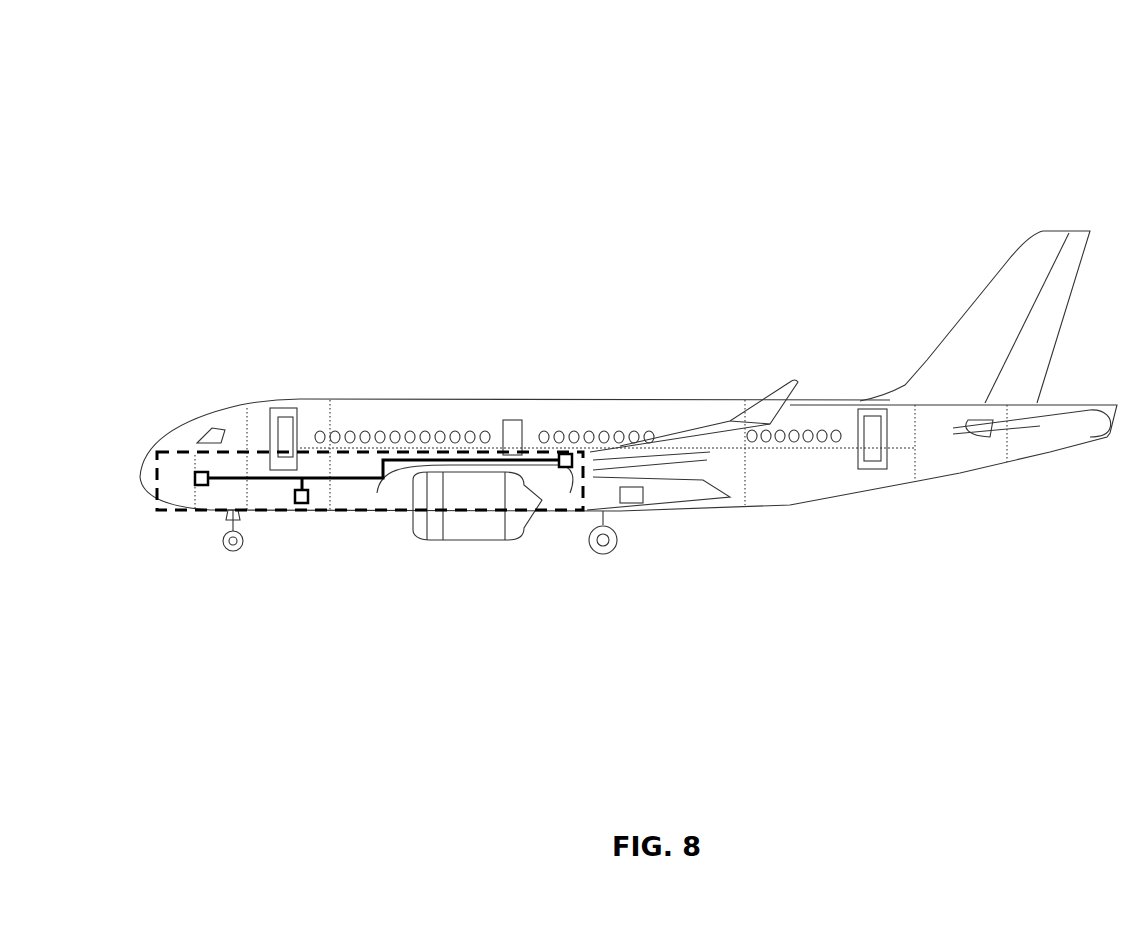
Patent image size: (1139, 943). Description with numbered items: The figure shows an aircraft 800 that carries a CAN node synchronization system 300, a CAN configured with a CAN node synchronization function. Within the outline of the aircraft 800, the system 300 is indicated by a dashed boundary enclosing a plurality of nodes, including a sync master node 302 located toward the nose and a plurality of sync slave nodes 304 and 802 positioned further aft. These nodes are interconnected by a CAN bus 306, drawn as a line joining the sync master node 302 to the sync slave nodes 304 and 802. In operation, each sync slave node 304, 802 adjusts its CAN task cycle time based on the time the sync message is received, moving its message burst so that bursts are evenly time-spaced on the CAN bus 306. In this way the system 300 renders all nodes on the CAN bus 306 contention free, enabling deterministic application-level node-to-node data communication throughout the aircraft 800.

The aircraft 800 is at (953, 120).
The system 300 is at (189, 513).
The sync master node 302 is at (193, 475).
The sync slave node 304 is at (306, 507).
The CAN bus 306 is at (266, 476).
The sync slave node 802 is at (557, 453).